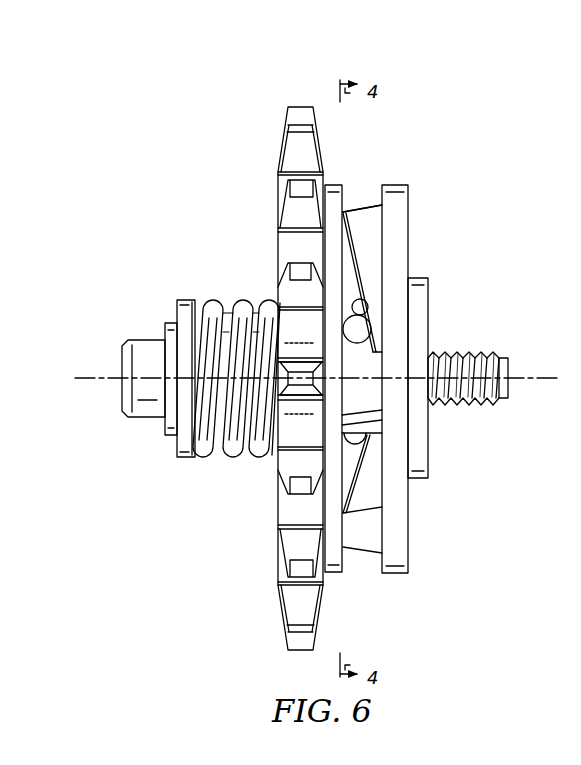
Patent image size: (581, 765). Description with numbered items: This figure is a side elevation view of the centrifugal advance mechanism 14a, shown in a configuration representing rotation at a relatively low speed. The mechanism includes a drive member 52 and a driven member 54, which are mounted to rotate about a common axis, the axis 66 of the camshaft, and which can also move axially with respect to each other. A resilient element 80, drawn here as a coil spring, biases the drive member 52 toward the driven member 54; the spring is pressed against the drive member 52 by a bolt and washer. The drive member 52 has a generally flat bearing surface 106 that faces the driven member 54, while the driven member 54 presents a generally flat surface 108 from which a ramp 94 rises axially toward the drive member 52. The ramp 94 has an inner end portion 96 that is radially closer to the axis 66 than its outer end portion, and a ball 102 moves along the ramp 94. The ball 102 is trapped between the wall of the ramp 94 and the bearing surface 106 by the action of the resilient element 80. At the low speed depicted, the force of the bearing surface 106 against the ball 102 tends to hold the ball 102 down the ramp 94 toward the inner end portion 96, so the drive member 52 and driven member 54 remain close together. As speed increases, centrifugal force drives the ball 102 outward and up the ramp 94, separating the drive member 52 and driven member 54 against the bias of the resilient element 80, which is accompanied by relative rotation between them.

The centrifugal advance mechanism 14a is at (421, 92).
The drive member 52 is at (300, 103).
The driven member 54 is at (401, 580).
The axis of the camshaft 66 is at (546, 376).
The resilient element 80 is at (243, 298).
The ramp 94 is at (365, 226).
The inner end portion 96 is at (367, 295).
The ball 102 is at (360, 360).
The bearing surface 106 is at (340, 574).
The flat surface 108 is at (383, 195).